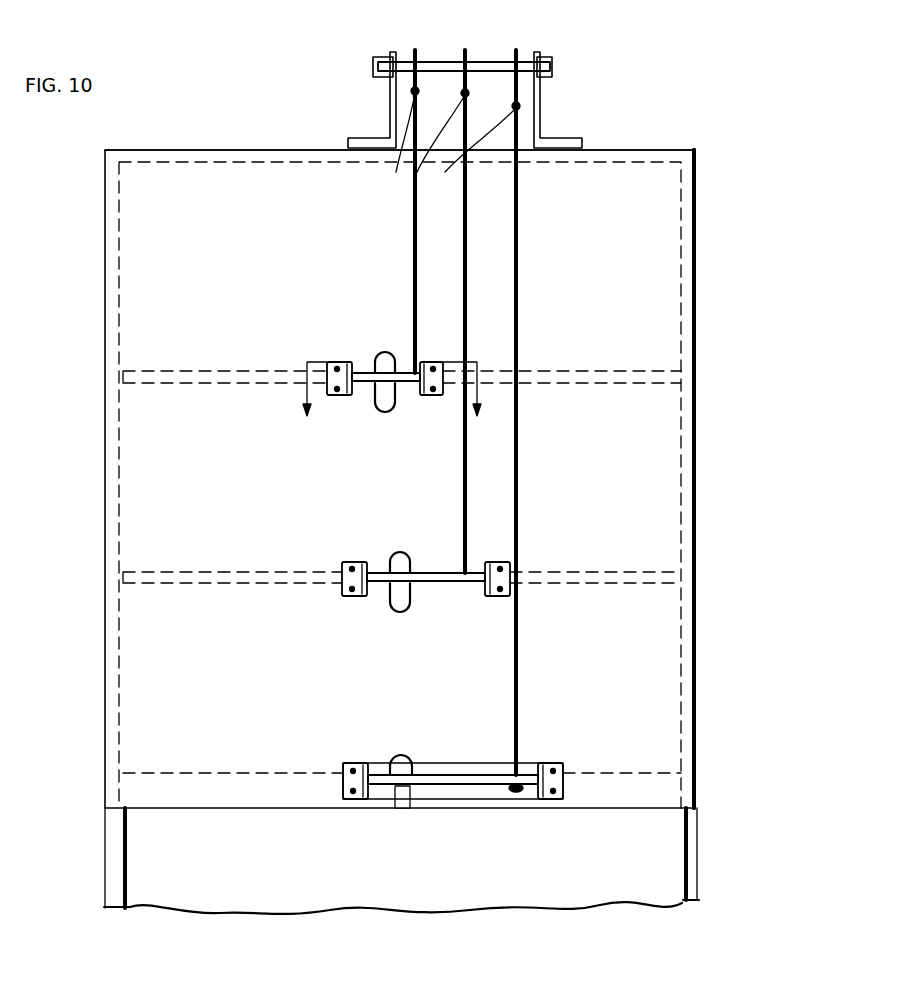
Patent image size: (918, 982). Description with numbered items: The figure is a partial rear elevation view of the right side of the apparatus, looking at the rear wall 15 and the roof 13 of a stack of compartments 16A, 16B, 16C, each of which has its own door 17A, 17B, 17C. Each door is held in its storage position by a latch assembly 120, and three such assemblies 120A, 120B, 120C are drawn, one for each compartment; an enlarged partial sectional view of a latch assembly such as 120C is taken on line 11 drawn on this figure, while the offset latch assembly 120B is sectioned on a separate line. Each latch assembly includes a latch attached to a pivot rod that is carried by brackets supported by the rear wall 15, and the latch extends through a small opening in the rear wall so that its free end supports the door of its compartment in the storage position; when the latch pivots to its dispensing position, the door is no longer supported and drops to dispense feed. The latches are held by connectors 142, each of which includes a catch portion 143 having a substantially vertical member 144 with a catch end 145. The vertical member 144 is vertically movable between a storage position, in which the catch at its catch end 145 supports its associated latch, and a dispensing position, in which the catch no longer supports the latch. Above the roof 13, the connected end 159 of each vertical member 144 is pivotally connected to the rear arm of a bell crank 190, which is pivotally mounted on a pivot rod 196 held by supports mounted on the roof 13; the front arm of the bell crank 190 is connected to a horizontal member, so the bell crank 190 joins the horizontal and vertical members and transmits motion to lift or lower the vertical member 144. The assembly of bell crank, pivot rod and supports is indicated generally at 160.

The section line 11 is at (396, 409).
The roof 13 is at (205, 150).
The rear wall 15 is at (652, 241).
The compartment 16A is at (150, 698).
The compartment 16B is at (150, 488).
The compartment 16C is at (150, 266).
The door 17A is at (140, 843).
The door 17B is at (150, 572).
The door 17C is at (123, 380).
The latch assembly 120 is at (560, 748).
The latch assembly 120A is at (409, 742).
The offset latch assembly 120B is at (382, 544).
The latch assembly 120C is at (340, 353).
The connector 142 is at (418, 324).
The catch portion 143 is at (418, 192).
The vertical member 144 is at (418, 252).
The catch end 145 is at (412, 303).
The connected end 159 is at (440, 172).
The mounting bracket assembly 160 is at (479, 76).
The bell crank 190 is at (514, 48).
The pivot rod 196 is at (404, 55).